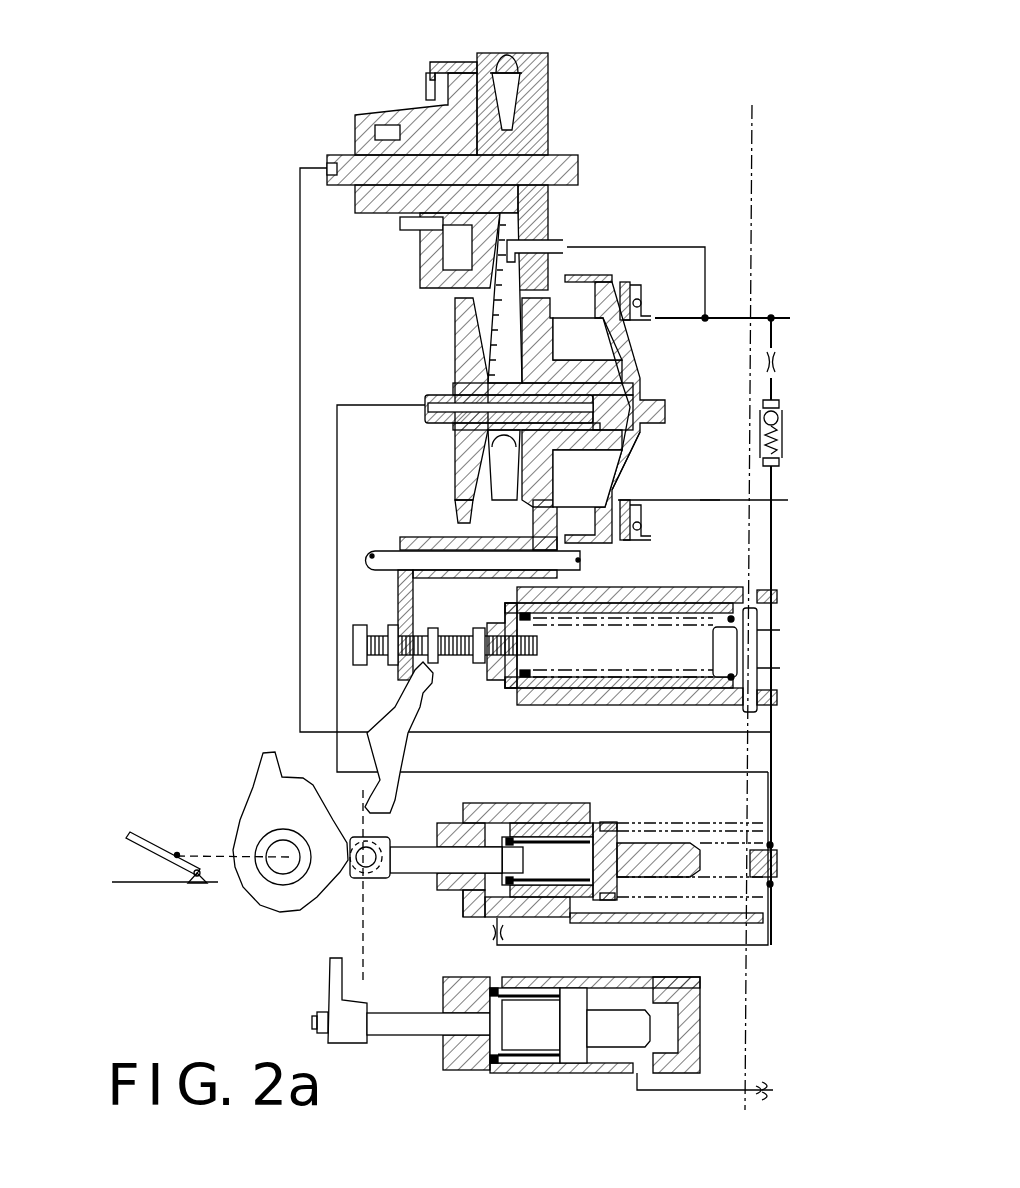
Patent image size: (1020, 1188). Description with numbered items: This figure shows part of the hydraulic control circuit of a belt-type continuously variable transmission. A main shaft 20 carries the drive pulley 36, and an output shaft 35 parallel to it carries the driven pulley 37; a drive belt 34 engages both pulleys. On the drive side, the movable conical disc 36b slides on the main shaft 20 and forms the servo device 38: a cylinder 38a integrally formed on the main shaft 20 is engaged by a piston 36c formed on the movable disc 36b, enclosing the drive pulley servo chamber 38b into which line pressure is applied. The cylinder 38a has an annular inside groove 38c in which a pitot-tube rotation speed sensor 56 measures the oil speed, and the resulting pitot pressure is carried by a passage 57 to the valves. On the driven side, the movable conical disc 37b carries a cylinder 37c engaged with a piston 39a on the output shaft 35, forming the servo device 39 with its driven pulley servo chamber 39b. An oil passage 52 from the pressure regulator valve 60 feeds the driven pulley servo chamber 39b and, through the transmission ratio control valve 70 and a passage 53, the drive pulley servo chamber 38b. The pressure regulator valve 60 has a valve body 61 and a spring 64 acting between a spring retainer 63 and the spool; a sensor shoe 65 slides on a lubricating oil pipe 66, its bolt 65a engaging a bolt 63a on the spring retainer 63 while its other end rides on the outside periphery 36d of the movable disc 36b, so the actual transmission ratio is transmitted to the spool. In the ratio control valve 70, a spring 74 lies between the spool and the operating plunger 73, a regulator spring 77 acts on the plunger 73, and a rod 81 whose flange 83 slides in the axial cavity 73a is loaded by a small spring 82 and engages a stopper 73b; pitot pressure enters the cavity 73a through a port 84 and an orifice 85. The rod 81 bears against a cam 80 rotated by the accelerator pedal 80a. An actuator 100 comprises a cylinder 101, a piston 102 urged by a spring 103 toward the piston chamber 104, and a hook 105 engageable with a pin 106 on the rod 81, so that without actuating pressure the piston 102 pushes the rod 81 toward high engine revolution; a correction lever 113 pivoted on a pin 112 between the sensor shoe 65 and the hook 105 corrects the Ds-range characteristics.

The main shaft 20 is at (438, 397).
The drive belt 34 is at (506, 442).
The output shaft 35 is at (578, 158).
The drive pulley 36 is at (440, 440).
The movable conical disc 36b is at (535, 500).
The piston 36c is at (568, 313).
The outside periphery 36d is at (587, 339).
The driven pulley 37 is at (559, 118).
The movable conical disc 37b is at (462, 83).
The cylinder 37c is at (430, 64).
The servo device 38 is at (658, 394).
The cylinder 38a is at (633, 464).
The drive pulley servo chamber 38b is at (600, 491).
The annular inside groove 38c is at (632, 289).
The servo device 39 is at (366, 246).
The piston 39a is at (426, 78).
The driven pulley servo chamber 39b is at (455, 265).
The oil passage 52 is at (622, 732).
The passage 53 is at (698, 772).
The rotation speed sensor 56 is at (643, 526).
The passage 57 is at (708, 502).
The pressure regulator valve 60 is at (642, 589).
The valve body 61 is at (716, 589).
The spring retainer 63 is at (555, 701).
The bolt 63a is at (501, 622).
The spring 64 is at (713, 690).
The sensor shoe 65 is at (398, 603).
The bolt 65a is at (378, 660).
The lubricating oil pipe 66 is at (386, 548).
The transmission ratio control valve 70 is at (468, 782).
The operating plunger 73 is at (590, 820).
The axial cavity 73a is at (575, 918).
The stopper 73b is at (465, 905).
The spring 74 is at (612, 826).
The regulator spring 77 is at (642, 840).
The cam 80 is at (320, 896).
The accelerator pedal 80a is at (174, 848).
The rod 81 is at (425, 877).
The small spring 82 is at (590, 880).
The flange 83 is at (470, 822).
The port 84 is at (515, 912).
The orifice 85 is at (484, 934).
The actuator 100 is at (462, 1075).
The cylinder 101 is at (690, 996).
The piston 102 is at (583, 995).
The spring 103 is at (511, 1000).
The piston chamber 104 is at (605, 1070).
The hook 105 is at (328, 994).
The pin 106 is at (372, 850).
The pin 112 is at (400, 743).
The correction lever 113 is at (400, 793).